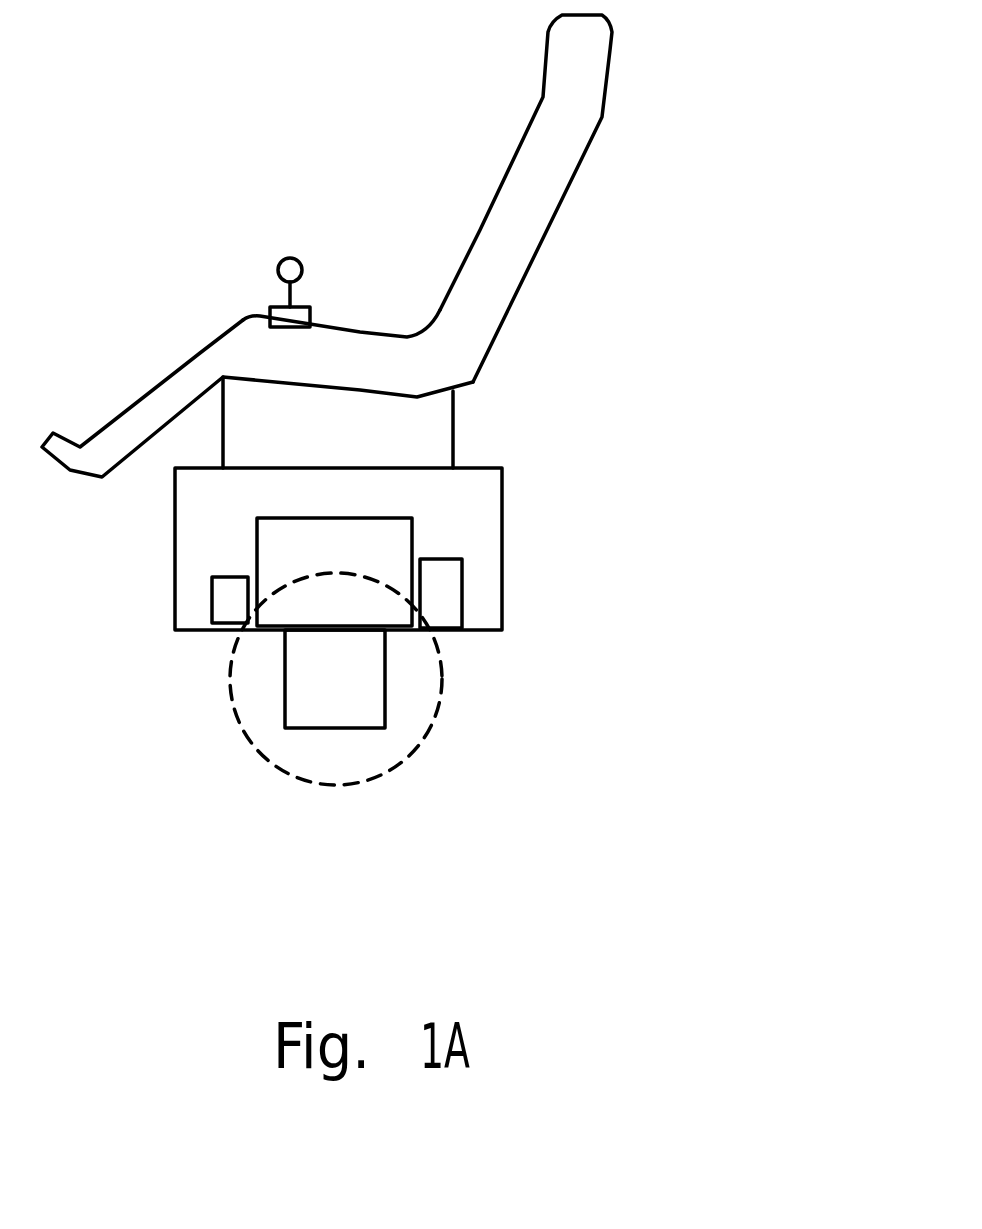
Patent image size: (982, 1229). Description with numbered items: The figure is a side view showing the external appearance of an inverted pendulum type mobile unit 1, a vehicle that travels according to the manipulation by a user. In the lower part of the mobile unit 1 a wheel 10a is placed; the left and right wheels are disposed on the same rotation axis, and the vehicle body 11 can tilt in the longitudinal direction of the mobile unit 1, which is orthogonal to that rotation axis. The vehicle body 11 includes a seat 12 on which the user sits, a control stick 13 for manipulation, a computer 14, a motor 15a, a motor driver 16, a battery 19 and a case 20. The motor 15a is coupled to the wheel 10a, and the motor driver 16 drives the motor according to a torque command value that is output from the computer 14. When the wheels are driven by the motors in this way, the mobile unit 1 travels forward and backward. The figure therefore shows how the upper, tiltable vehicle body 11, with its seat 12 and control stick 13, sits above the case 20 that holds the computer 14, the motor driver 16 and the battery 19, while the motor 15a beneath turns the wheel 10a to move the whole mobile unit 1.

The inverted pendulum type mobile unit 1 is at (245, 90).
The vehicle body 11 is at (582, 377).
The seat 12 is at (552, 210).
The control stick 13 is at (292, 266).
The computer 14 is at (228, 583).
The motor 15a is at (383, 690).
The motor driver 16 is at (460, 602).
The battery 19 is at (405, 533).
The case 20 is at (497, 488).
The wheel 10a is at (418, 747).